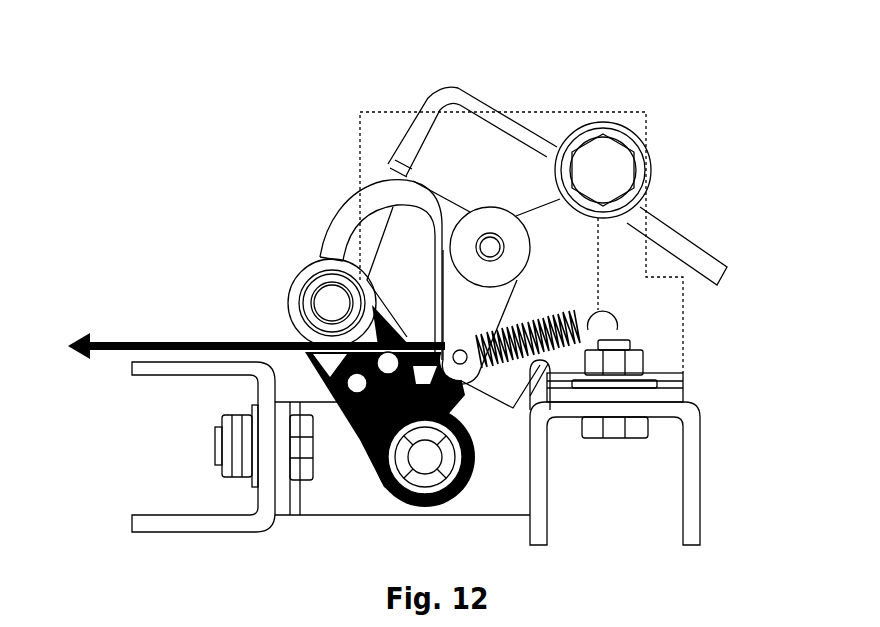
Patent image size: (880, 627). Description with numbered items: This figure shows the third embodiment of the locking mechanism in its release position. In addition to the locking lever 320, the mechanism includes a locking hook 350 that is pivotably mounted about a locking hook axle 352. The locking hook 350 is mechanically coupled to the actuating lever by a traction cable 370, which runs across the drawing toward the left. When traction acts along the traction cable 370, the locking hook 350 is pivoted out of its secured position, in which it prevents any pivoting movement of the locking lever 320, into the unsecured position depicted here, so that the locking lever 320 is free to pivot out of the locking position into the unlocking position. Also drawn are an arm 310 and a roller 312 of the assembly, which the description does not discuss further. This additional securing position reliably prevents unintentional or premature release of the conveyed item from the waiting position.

The lever arm 310 is at (462, 152).
The roller 312 is at (614, 164).
The locking lever 320 is at (343, 433).
The locking hook 350 is at (377, 196).
The locking hook axle 352 is at (488, 243).
The traction cable 370 is at (192, 337).